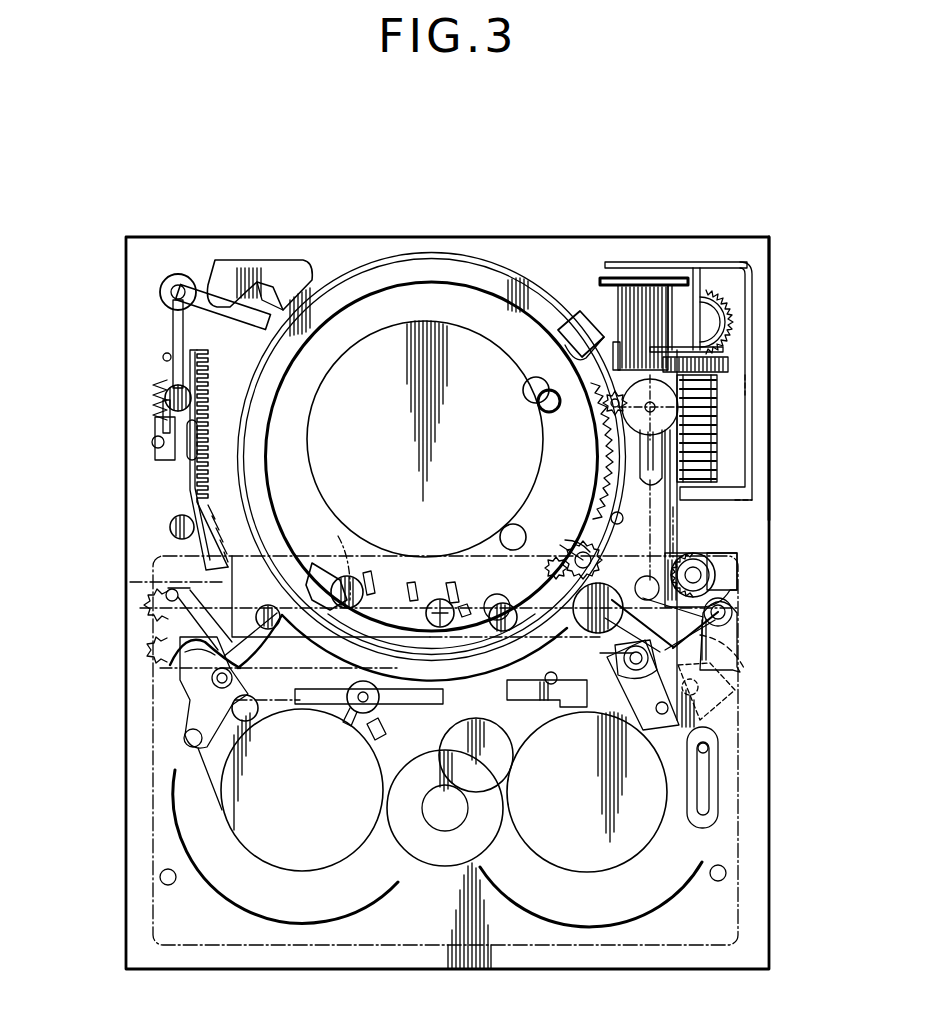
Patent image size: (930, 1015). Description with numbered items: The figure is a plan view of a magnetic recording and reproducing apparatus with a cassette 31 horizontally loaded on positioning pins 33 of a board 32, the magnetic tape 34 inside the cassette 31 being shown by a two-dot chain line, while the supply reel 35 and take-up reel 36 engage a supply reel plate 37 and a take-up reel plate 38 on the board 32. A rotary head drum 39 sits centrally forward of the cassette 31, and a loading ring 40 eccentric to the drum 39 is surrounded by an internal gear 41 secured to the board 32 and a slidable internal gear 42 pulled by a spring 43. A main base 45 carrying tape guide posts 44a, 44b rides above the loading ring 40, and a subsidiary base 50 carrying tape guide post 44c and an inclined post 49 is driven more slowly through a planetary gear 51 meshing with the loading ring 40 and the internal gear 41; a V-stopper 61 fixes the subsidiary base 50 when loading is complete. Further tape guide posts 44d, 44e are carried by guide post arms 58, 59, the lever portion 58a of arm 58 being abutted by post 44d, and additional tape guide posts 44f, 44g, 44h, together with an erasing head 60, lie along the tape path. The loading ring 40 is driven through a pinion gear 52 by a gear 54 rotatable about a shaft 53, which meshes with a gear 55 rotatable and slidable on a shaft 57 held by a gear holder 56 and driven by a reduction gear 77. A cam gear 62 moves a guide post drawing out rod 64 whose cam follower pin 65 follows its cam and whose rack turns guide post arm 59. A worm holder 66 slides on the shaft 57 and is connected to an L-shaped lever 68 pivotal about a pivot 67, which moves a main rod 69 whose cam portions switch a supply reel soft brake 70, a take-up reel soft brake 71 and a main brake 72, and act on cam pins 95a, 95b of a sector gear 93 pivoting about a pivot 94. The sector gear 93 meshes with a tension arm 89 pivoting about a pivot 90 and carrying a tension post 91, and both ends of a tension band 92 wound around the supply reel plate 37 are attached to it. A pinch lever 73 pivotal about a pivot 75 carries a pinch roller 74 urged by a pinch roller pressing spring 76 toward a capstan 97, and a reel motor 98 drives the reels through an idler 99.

The cassette 31 is at (181, 969).
The board 32 is at (770, 252).
The positioning pins 33 is at (170, 885).
The magnetic tape 34 is at (340, 547).
The supply reel 35 is at (248, 912).
The take-up reel 36 is at (535, 910).
The supply reel plate 37 is at (312, 868).
The take-up reel plate 38 is at (645, 852).
The rotary head drum 39 is at (470, 330).
The loading ring 40 is at (430, 255).
The internal gear 41 is at (186, 489).
The internal gear 42 is at (190, 433).
The spring 43 is at (160, 380).
The tape guide post 44a is at (355, 580).
The tape guide post 44b is at (440, 599).
The tape guide post 44c is at (491, 604).
The tape guide post 44d is at (165, 393).
The tape guide post 44e is at (665, 556).
The tape guide post 44f is at (524, 385).
The tape guide post 44g is at (511, 525).
The tape guide post 44h is at (170, 528).
The main base 45 is at (312, 565).
The inclined post 49 is at (553, 557).
The subsidiary base 50 is at (573, 554).
The planetary gear 51 is at (594, 553).
The pinion gear 52 is at (603, 409).
The shaft 53 is at (720, 402).
The gear 54 is at (606, 455).
The gear 55 is at (720, 434).
The gear holder 56 is at (620, 278).
The shaft 57 is at (702, 320).
The guide post arm 58 is at (173, 314).
The lever portion 58a is at (222, 278).
The guide post arm 59 is at (737, 584).
The erasing head 60 is at (579, 320).
The V-stopper 61 is at (283, 268).
The cam gear 62 is at (715, 297).
The guide post drawing out rod 64 is at (660, 512).
The cam follower pin 65 is at (745, 382).
The worm holder 66 is at (728, 362).
The pivot 67 is at (704, 697).
The L-shaped lever 68 is at (735, 690).
The main rod 69 is at (252, 718).
The supply reel soft brake 70 is at (352, 712).
The take-up reel soft brake 71 is at (568, 707).
The main brake 72 is at (384, 736).
The pinch lever 73 is at (622, 661).
The pinch roller 74 is at (606, 594).
The pivot 75 is at (737, 613).
The pinch roller pressing spring 76 is at (750, 651).
The reduction gear 77 is at (665, 312).
The tension arm 89 is at (145, 606).
The pivot 90 is at (150, 565).
The tension post 91 is at (270, 605).
The tension band 92 is at (198, 755).
The sector gear 93 is at (208, 694).
The pivot 94 is at (180, 668).
The cam pin 95a is at (372, 641).
The cam pin 95b is at (148, 651).
The capstan 97 is at (618, 512).
The reel motor 98 is at (406, 850).
The idler 99 is at (512, 761).